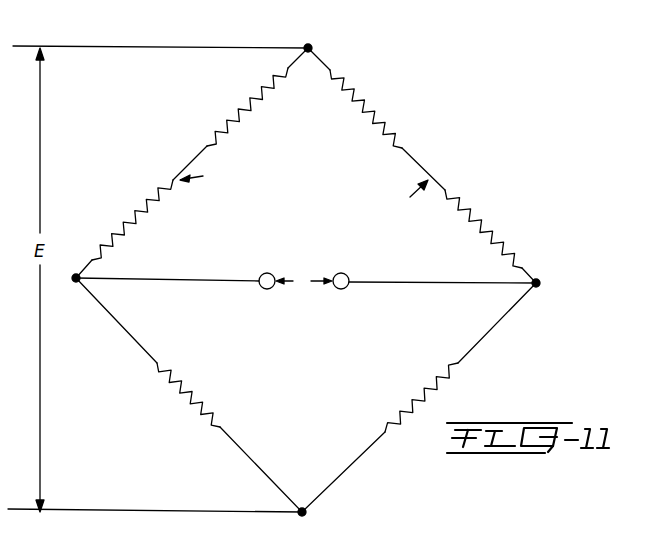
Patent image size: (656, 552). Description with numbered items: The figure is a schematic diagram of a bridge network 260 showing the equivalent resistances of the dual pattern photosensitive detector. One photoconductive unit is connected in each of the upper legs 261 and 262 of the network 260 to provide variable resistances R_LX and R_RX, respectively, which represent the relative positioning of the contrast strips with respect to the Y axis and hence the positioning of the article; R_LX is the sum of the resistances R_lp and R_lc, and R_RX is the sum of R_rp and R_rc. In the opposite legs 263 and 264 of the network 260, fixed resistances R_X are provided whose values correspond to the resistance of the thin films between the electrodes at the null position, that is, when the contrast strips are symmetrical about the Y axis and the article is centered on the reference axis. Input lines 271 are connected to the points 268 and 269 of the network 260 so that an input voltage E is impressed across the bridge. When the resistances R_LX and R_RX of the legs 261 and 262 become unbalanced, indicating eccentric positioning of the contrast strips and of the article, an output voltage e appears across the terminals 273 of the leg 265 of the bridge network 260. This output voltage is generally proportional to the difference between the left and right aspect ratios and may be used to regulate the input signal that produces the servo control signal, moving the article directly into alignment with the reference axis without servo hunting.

The bridge network 260 is at (318, 280).
The leg 261 is at (191, 167).
The leg 262 is at (420, 160).
The leg 263 is at (128, 336).
The leg 264 is at (485, 337).
The leg 265 is at (195, 278).
The point 268 is at (312, 44).
The point 269 is at (306, 514).
The input lines 271 is at (103, 48).
The terminals 273 is at (267, 289).